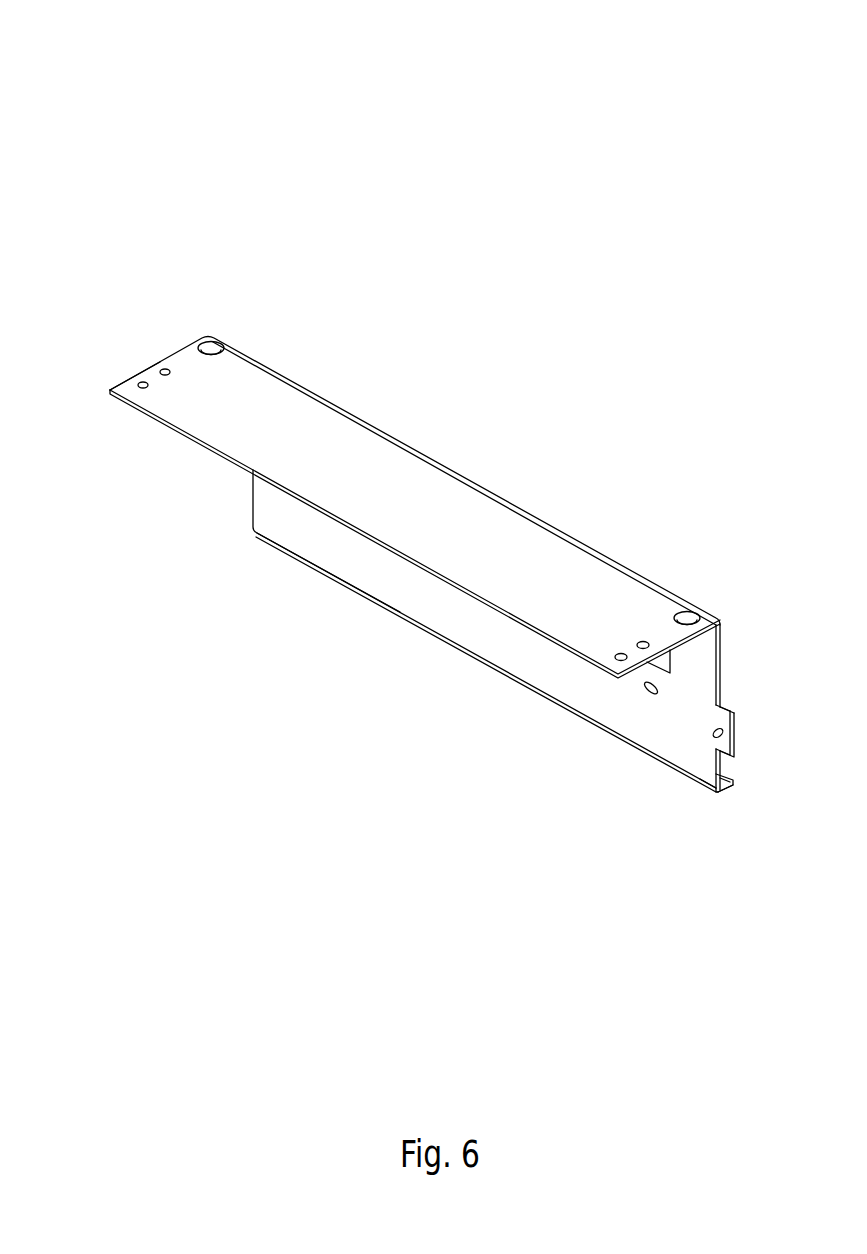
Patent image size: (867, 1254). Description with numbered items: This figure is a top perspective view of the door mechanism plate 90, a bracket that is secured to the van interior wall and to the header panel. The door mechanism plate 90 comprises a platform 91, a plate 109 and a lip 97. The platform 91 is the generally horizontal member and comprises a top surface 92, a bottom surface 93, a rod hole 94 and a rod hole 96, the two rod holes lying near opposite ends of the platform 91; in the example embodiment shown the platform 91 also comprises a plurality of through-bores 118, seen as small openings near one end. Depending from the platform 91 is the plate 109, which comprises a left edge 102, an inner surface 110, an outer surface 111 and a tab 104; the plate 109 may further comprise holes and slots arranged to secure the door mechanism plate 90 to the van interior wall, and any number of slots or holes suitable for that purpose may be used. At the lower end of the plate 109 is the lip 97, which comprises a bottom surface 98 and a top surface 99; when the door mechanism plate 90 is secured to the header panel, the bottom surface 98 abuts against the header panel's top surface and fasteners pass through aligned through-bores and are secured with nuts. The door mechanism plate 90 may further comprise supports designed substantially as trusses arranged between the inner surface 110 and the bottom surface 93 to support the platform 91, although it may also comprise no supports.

The door mechanism plate 90 is at (677, 80).
The platform 91 is at (578, 573).
The top surface 92 is at (413, 481).
The bottom surface 93 is at (152, 420).
The rod hole 94 is at (703, 600).
The rod hole 96 is at (218, 333).
The lip 97 is at (718, 793).
The bottom surface 98 is at (725, 790).
The top surface 99 is at (723, 775).
The left edge 102 is at (722, 648).
The tab 104 is at (733, 735).
The plate 109 is at (362, 563).
The inner surface 110 is at (505, 646).
The outer surface 111 is at (720, 697).
The through-bores 118 is at (163, 358).